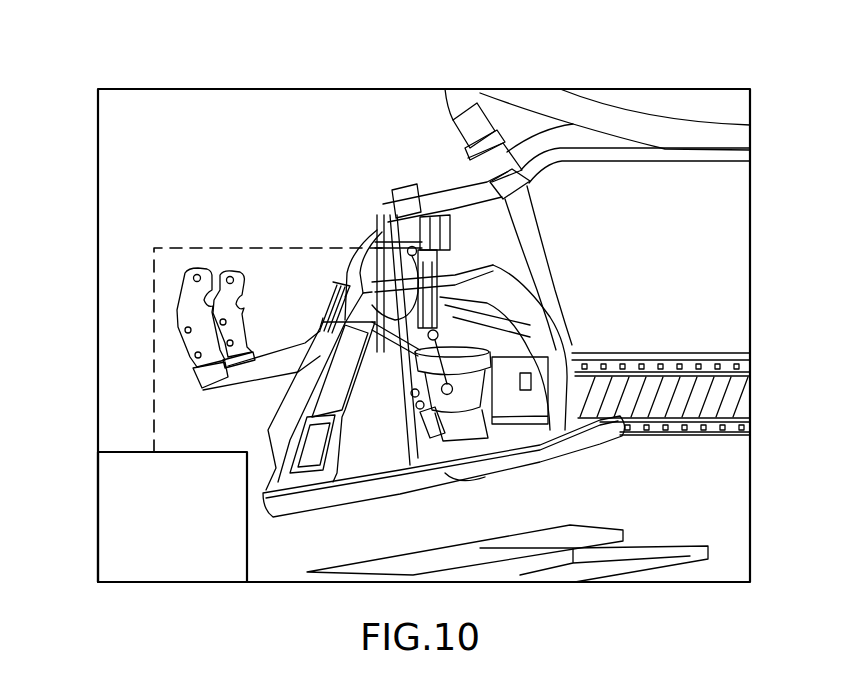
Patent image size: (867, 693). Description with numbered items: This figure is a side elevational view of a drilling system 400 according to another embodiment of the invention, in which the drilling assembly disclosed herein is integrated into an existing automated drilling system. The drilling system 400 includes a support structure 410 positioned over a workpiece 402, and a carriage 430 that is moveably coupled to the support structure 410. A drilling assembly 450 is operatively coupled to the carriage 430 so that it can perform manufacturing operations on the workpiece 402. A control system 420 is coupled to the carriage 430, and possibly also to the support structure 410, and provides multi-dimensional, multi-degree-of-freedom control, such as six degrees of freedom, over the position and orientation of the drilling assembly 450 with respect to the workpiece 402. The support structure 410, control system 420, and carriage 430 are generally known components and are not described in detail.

The drilling system 400 is at (176, 78).
The workpiece 402 is at (480, 553).
The support structure 410 is at (672, 403).
The control system 420 is at (128, 452).
The carriage 430 is at (576, 336).
The drilling assembly 450 is at (467, 433).